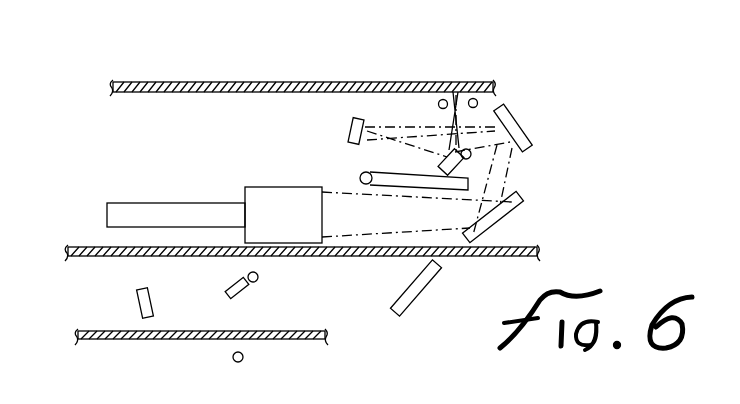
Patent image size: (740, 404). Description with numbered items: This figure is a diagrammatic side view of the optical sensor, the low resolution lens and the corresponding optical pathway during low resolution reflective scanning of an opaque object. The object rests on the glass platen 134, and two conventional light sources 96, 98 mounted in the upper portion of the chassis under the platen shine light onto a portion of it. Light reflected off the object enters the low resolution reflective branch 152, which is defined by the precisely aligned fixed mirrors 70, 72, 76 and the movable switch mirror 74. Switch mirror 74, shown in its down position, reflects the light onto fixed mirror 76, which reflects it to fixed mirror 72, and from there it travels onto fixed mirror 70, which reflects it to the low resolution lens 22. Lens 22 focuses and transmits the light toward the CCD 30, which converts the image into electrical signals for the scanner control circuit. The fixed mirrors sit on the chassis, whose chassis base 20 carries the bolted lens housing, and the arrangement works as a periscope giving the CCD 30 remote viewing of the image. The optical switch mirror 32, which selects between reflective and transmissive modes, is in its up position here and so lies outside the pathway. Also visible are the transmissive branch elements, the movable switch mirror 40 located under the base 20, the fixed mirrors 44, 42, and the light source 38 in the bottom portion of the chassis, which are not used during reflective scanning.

The platen 134 is at (305, 82).
The light source 96 is at (443, 99).
The light source 98 is at (470, 98).
The fixed mirror 72 is at (520, 122).
The low resolution reflective branch 152 is at (568, 152).
The fixed mirror 76 is at (350, 127).
The movable switch mirror 74 is at (442, 167).
The fixed mirror 70 is at (515, 207).
The CCD 30 is at (120, 202).
The low resolution lens 22 is at (249, 188).
The chassis base 20 is at (138, 257).
The optical switch mirror 32 is at (415, 185).
The fixed mirror 42 is at (420, 292).
The fixed mirror 44 is at (135, 302).
The movable switch mirror 40 is at (245, 287).
The light source 38 is at (242, 362).